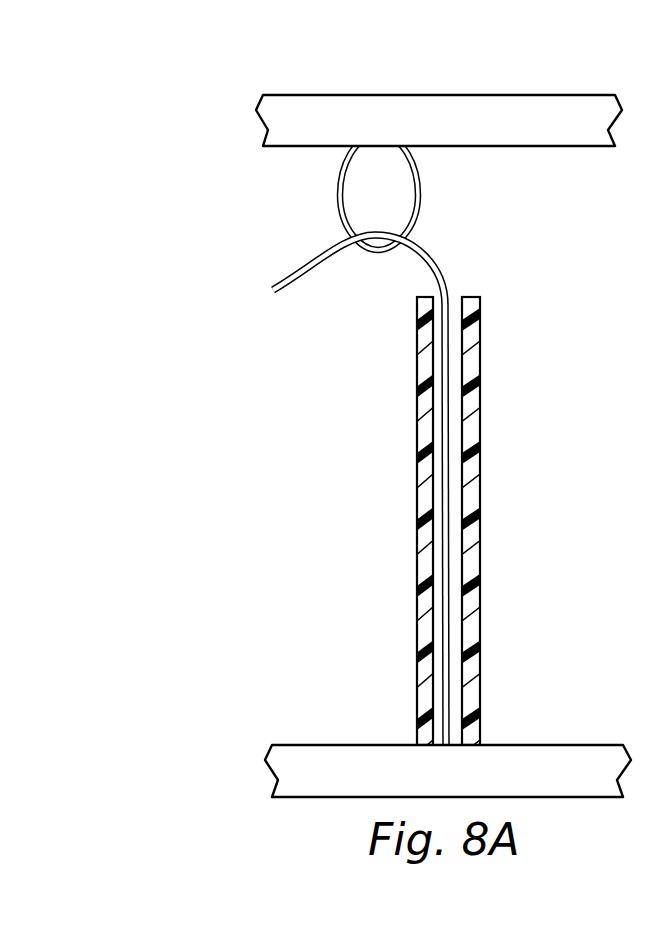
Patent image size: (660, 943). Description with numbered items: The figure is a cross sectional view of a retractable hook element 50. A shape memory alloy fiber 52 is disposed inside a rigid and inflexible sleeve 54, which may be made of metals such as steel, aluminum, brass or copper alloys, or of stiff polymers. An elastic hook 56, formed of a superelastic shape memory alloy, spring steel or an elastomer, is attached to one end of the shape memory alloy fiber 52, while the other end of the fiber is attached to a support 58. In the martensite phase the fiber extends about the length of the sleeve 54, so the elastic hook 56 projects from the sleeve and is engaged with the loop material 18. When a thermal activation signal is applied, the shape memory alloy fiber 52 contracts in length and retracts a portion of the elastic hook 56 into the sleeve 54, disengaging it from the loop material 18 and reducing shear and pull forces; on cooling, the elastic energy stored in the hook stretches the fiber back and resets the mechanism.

The loop material 18 is at (340, 198).
The retractable hook element 50 is at (232, 100).
The shape memory alloy fiber 52 is at (455, 426).
The sleeve 54 is at (481, 612).
The elastic hook 56 is at (432, 253).
The support 58 is at (544, 745).